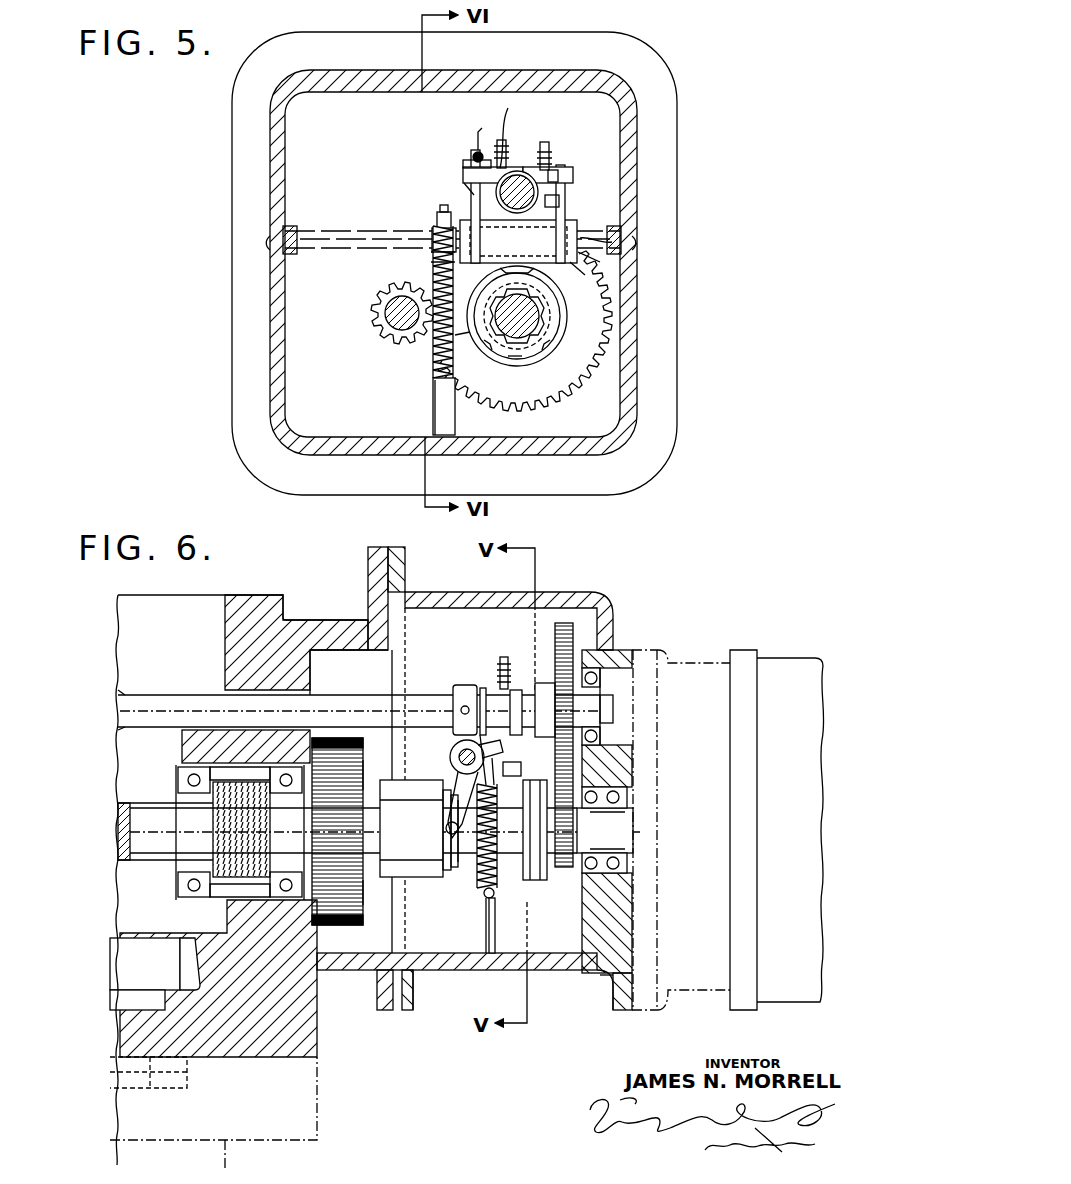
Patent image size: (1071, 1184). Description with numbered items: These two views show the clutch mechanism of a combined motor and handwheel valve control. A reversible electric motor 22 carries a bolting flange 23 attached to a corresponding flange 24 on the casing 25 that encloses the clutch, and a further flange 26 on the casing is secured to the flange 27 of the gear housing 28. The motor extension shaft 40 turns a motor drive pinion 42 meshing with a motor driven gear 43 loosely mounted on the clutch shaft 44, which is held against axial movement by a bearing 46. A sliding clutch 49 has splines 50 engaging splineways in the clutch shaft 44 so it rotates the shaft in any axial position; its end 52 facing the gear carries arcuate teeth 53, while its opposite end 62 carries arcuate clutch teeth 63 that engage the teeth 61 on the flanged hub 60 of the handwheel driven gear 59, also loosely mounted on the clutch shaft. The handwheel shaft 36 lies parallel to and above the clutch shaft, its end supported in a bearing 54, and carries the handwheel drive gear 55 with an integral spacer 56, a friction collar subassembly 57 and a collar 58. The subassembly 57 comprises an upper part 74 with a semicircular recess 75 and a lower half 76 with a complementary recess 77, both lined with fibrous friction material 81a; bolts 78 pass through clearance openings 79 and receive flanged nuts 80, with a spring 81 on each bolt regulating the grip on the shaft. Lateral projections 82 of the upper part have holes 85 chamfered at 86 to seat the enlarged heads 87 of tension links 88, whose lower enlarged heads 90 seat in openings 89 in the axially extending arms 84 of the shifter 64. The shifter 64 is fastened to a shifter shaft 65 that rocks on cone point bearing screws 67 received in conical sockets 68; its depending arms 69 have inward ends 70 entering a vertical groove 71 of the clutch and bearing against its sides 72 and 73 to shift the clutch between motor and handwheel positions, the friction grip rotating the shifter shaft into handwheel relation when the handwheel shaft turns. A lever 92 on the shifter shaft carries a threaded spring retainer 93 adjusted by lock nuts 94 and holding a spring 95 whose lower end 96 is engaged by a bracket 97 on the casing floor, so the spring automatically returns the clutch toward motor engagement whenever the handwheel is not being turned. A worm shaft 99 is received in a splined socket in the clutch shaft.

In FIG. 6, the reversible electric motor 22 is at (793, 664).
In FIG. 6, the bolting flange 23 is at (645, 1010).
In FIG. 6, the flange 24 is at (615, 990).
In FIG. 5, the casing 25 is at (270, 356).
In FIG. 6, the casing 25 is at (572, 608).
In FIG. 5, the flange 26 is at (668, 356).
In FIG. 6, the flange 26 is at (405, 565).
In FIG. 6, the flange 27 is at (368, 553).
In FIG. 6, the gear housing 28 is at (297, 634).
In FIG. 6, the handwheel shaft 36 is at (366, 712).
In FIG. 5, the motor extension shaft 40 is at (398, 313).
In FIG. 5, the motor drive pinion 42 is at (384, 327).
In FIG. 5, the motor driven gear 43 is at (540, 390).
In FIG. 6, the motor driven gear 43 is at (337, 928).
In FIG. 5, the clutch shaft 44 is at (521, 328).
In FIG. 6, the clutch shaft 44 is at (620, 832).
In FIG. 6, the bearing 46 is at (186, 884).
In FIG. 5, the sliding clutch 49 is at (462, 337).
In FIG. 6, the sliding clutch 49 is at (406, 840).
In FIG. 5, the splines 50 is at (538, 332).
In FIG. 6, the end 52 is at (372, 785).
In FIG. 6, the arcuate teeth 53 is at (365, 880).
In FIG. 6, the bearing 54 is at (600, 683).
In FIG. 6, the handwheel drive gear 55 is at (573, 634).
In FIG. 6, the integral spacer 56 is at (548, 682).
In FIG. 6, the friction collar subassembly 57 is at (482, 700).
In FIG. 6, the collar 58 is at (458, 686).
In FIG. 6, the handwheel driven gear 59 is at (543, 878).
In FIG. 6, the flanged hub 60 is at (536, 882).
In FIG. 6, the arcuate teeth 61 is at (530, 884).
In FIG. 5, the end 62 is at (490, 340).
In FIG. 6, the end 62 is at (522, 770).
In FIG. 5, the arcuate clutch teeth 63 is at (512, 352).
In FIG. 5, the shifter 64 is at (518, 241).
In FIG. 6, the shifter 64 is at (465, 752).
In FIG. 5, the shifter shaft 65 is at (300, 248).
In FIG. 6, the shifter shaft 65 is at (458, 757).
In FIG. 5, the cone point bearing screws 67 is at (628, 236).
In FIG. 5, the conical sockets 68 is at (296, 240).
In FIG. 5, the depending arms 69 is at (585, 272).
In FIG. 6, the depending arms 69 is at (450, 822).
In FIG. 5, the opposed ends 70 is at (548, 330).
In FIG. 5, the vertical groove 71 is at (562, 306).
In FIG. 6, the vertical groove 71 is at (456, 876).
In FIG. 6, the side 72 is at (452, 872).
In FIG. 6, the side 73 is at (462, 880).
In FIG. 5, the upper part 74 is at (522, 172).
In FIG. 5, the semi-circular recess 75 is at (503, 140).
In FIG. 5, the lower half 76 is at (466, 192).
In FIG. 5, the semi-circular recess 77 is at (470, 208).
In FIG. 5, the bolts 78 is at (465, 176).
In FIG. 5, the clearance openings 79 is at (570, 176).
In FIG. 5, the flanged nuts 80 is at (549, 148).
In FIG. 6, the flanged nuts 80 is at (504, 658).
In FIG. 5, the spring 81 is at (552, 157).
In FIG. 6, the spring 81 is at (499, 672).
In FIG. 5, the fibrous friction material 81a is at (497, 129).
In FIG. 5, the lateral projections 82 is at (558, 175).
In FIG. 5, the axially extending arms 84 is at (566, 216).
In FIG. 5, the holes 85 is at (463, 164).
In FIG. 5, the chamfer 86 is at (472, 156).
In FIG. 5, the enlarged heads 87 is at (478, 132).
In FIG. 5, the tension links 88 is at (560, 201).
In FIG. 6, the tension links 88 is at (516, 694).
In FIG. 5, the openings 89 is at (604, 244).
In FIG. 5, the enlarged heads 90 is at (596, 258).
In FIG. 5, the lever 92 is at (437, 222).
In FIG. 5, the threaded spring retainer 93 is at (432, 256).
In FIG. 6, the threaded spring retainer 93 is at (487, 811).
In FIG. 5, the lock nuts 94 is at (432, 232).
In FIG. 5, the spring 95 is at (432, 264).
In FIG. 6, the spring 95 is at (486, 893).
In FIG. 5, the lower end 96 is at (436, 386).
In FIG. 6, the lower end 96 is at (493, 920).
In FIG. 5, the bracket 97 is at (455, 414).
In FIG. 6, the bracket 97 is at (488, 940).
In FIG. 6, the worm shaft 99 is at (160, 806).